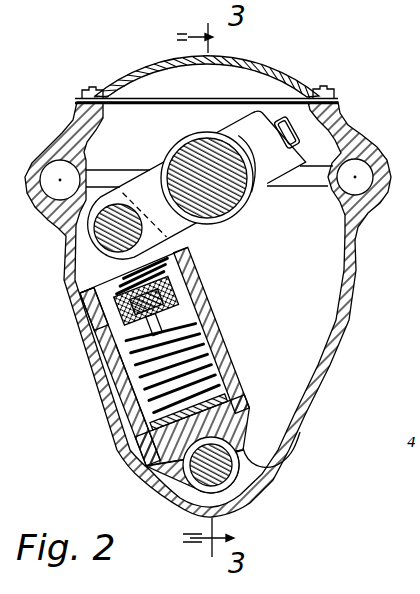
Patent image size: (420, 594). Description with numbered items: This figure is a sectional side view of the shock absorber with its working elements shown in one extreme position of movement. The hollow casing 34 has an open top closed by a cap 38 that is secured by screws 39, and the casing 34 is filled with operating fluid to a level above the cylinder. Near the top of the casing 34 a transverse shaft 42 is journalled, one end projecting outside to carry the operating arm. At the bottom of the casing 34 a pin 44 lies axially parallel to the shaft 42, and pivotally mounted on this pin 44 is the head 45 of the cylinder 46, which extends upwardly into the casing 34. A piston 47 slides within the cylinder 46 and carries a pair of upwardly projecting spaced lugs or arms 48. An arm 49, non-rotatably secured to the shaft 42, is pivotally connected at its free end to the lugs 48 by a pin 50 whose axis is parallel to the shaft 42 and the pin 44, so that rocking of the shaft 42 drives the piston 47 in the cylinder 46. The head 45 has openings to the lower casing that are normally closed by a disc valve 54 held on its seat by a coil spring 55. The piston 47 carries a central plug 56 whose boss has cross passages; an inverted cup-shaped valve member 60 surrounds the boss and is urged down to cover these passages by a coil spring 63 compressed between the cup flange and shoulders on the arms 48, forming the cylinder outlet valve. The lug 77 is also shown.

The shock absorber casing 34 is at (358, 248).
The cap 38 is at (279, 76).
The screws 39 is at (335, 88).
The transverse shaft 42 is at (237, 198).
The pin 44 is at (247, 480).
The head 45 is at (143, 472).
The cylinder 46 is at (227, 355).
The piston 47 is at (205, 308).
The lugs or arms 48 is at (92, 270).
The arm 49 is at (150, 178).
The pin 50 is at (95, 234).
The disc valve 54 is at (236, 382).
The coil spring 55 is at (128, 392).
The central plug 56 is at (110, 342).
The inverted cup-shaped valve member 60 is at (180, 290).
The coil spring 63 is at (100, 296).
The lug 77 is at (282, 112).